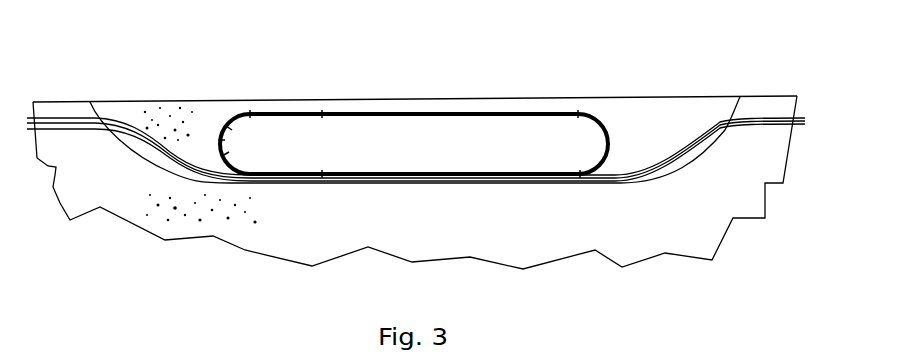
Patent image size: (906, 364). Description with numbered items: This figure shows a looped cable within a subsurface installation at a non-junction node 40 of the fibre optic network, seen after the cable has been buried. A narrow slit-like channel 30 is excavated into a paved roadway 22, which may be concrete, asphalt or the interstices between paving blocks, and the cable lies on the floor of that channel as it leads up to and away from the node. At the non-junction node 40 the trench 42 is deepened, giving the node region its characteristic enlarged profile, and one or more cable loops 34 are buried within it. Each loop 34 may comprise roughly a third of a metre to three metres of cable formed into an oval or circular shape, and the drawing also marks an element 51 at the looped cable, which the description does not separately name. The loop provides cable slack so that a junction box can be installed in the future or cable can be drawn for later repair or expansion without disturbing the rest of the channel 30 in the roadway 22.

The paved roadway 22 is at (415, 182).
The channel 30 is at (416, 115).
The cable loop 34 is at (414, 130).
The non-junction node 40 is at (415, 68).
The trench 42 is at (426, 118).
The coil loop 51 is at (437, 116).